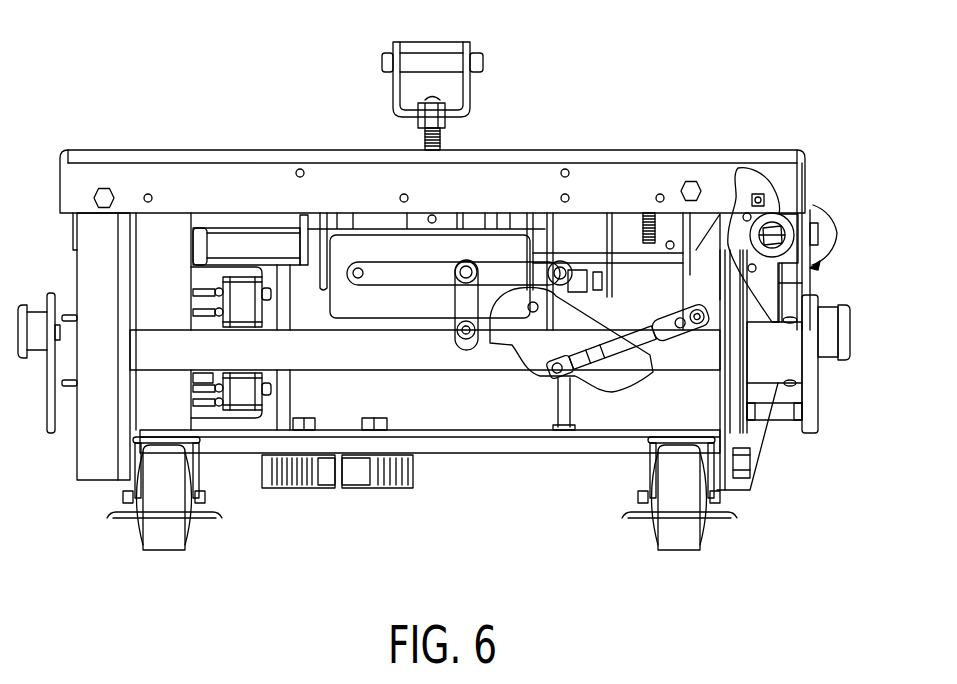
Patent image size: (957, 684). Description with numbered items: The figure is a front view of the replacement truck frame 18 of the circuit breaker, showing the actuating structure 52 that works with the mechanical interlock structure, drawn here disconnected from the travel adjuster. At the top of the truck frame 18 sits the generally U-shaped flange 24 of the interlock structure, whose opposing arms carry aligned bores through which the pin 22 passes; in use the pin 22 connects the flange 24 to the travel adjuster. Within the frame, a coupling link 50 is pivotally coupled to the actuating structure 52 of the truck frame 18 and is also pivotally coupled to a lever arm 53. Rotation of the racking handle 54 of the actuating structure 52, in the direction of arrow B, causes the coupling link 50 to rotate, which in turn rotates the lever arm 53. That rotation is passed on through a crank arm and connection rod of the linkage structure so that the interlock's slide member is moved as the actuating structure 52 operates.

The truck frame 18 is at (82, 461).
The pin 22 is at (431, 62).
The U-shaped flange 24 is at (470, 96).
The coupling link 50 is at (460, 300).
The actuating structure 52 is at (528, 363).
The lever arm 53 is at (390, 278).
The racking handle 54 is at (752, 168).
The arrow B is at (818, 264).